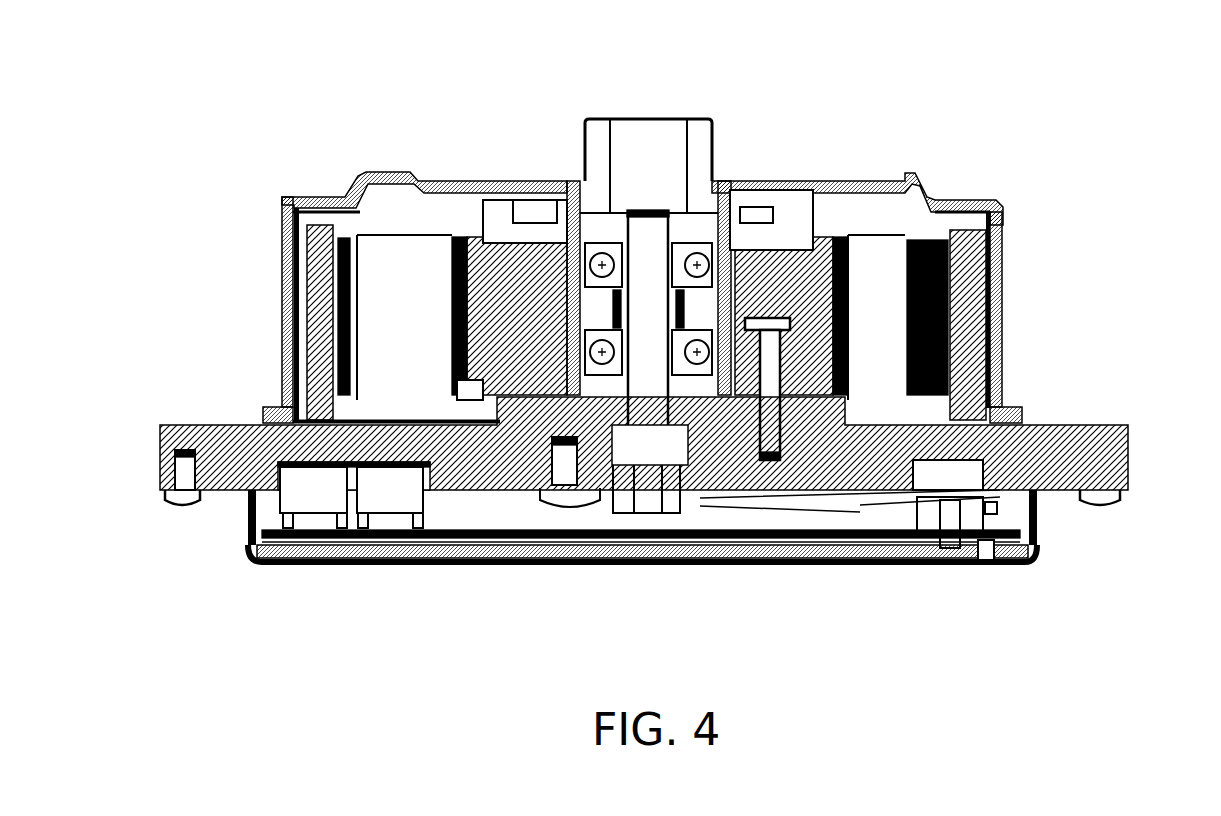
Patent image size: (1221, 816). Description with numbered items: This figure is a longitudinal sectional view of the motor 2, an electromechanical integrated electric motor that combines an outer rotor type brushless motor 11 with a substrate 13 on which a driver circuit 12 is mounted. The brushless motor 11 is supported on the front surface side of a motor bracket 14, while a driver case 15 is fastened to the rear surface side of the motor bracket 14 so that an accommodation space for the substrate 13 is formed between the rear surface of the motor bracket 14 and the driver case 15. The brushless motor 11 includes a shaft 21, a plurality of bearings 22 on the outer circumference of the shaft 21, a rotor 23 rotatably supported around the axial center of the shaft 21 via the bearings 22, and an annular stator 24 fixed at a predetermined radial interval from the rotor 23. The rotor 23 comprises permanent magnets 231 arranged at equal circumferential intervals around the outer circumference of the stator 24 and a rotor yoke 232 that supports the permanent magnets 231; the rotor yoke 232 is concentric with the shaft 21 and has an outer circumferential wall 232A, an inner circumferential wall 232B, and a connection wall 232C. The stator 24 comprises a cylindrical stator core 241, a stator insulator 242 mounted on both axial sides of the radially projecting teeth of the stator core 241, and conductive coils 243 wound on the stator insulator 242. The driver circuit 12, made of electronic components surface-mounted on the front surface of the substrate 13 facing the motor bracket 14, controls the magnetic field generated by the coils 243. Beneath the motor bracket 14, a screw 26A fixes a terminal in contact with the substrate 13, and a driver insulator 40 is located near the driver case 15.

The motor 2 is at (212, 100).
The brushless motor 11 is at (186, 268).
The driver circuit 12 is at (307, 507).
The substrate 13 is at (1040, 557).
The motor bracket 14 is at (1130, 455).
The driver case 15 is at (648, 568).
The shaft 21 is at (650, 210).
The bearings 22 is at (703, 263).
The rotor 23 is at (1012, 190).
The stator 24 is at (424, 383).
The screw 26A is at (955, 510).
The driver insulator 40 is at (987, 572).
The permanent magnets 231 is at (300, 272).
The rotor yoke 232 is at (283, 386).
The outer circumferential wall 232A is at (287, 325).
The inner circumferential wall 232B is at (527, 218).
The connection wall 232C is at (413, 176).
The stator core 241 is at (507, 223).
The stator insulator 242 is at (343, 233).
The coils 243 is at (418, 326).